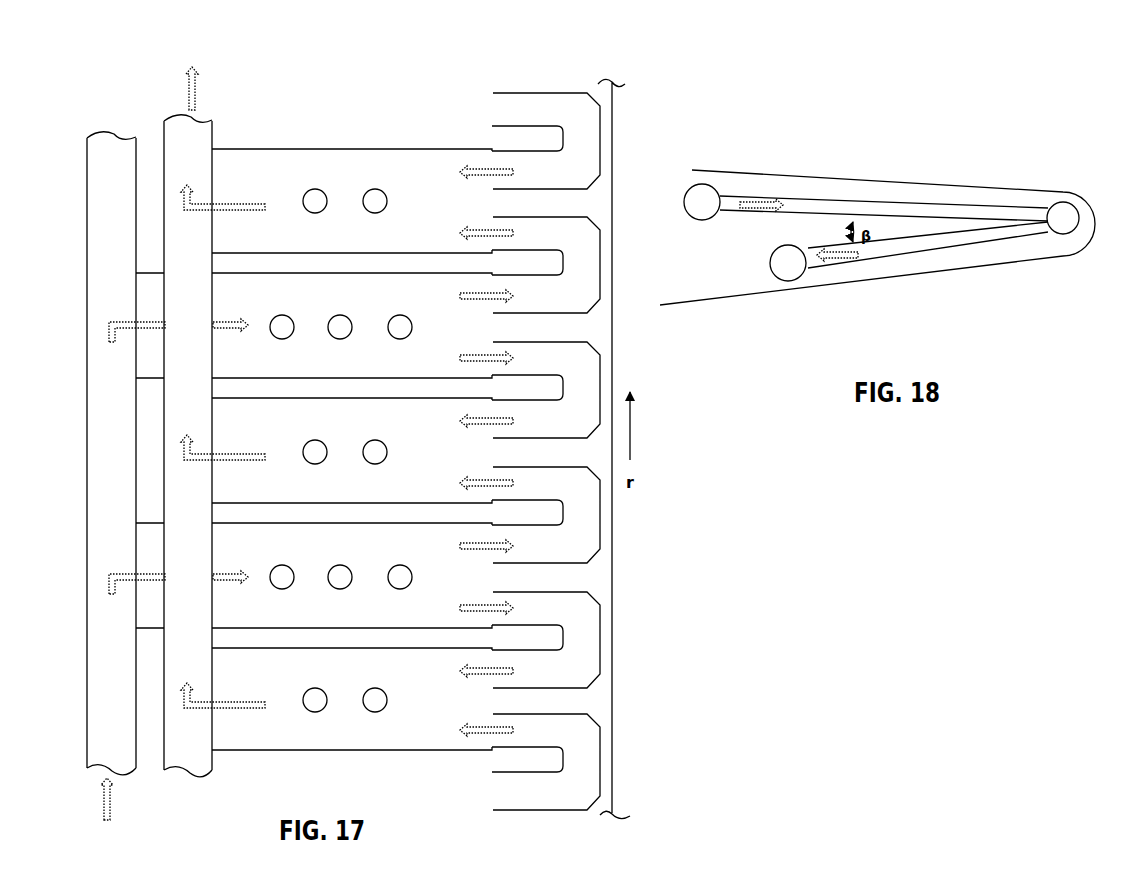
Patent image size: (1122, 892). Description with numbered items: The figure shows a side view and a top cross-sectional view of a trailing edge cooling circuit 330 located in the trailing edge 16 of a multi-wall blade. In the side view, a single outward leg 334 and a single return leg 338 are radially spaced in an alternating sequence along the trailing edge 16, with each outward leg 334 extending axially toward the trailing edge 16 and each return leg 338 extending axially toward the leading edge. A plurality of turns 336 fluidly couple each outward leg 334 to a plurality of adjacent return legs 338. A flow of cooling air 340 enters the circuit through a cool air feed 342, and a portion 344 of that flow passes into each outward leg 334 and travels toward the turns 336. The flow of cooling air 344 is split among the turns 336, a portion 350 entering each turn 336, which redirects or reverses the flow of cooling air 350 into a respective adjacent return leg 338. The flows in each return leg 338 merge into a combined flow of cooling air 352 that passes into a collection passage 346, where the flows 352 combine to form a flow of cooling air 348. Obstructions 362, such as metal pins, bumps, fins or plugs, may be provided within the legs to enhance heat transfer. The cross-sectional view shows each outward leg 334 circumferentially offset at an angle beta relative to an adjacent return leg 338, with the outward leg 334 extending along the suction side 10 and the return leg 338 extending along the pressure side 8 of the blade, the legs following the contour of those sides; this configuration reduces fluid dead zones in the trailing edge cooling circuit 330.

In FIG. 18, the pressure side 8 is at (855, 307).
In FIG. 18, the suction side 10 is at (933, 160).
In FIG. 17, the trailing edge 16 is at (638, 610).
In FIG. 18, the trailing edge 16 is at (1055, 150).
In FIG. 17, the trailing edge cooling circuit 330 is at (412, 93).
In FIG. 17, the outward leg 334 is at (352, 450).
In FIG. 18, the outward leg 334 is at (973, 207).
In FIG. 17, the turn 336 is at (543, 82).
In FIG. 18, the turn 336 is at (1070, 243).
In FIG. 17, the return leg 338 is at (352, 449).
In FIG. 18, the return leg 338 is at (997, 240).
In FIG. 17, the flow of cooling air 340 is at (112, 805).
In FIG. 17, the cool air feed 342 is at (87, 665).
In FIG. 18, the cool air feed 342 is at (693, 220).
In FIG. 17, the portion of the flow of cooling air 344 is at (127, 320).
In FIG. 18, the portion of the flow of cooling air 344 is at (756, 210).
In FIG. 17, the collection passage 346 is at (205, 773).
In FIG. 18, the collection passage 346 is at (768, 268).
In FIG. 17, the flow of cooling air 348 is at (197, 70).
In FIG. 17, the portion of the flow of cooling air 350 is at (483, 228).
In FIG. 17, the combined flow of cooling air 352 is at (232, 212).
In FIG. 18, the combined flow of cooling air 352 is at (837, 253).
In FIG. 17, the obstructions 362 is at (395, 340).